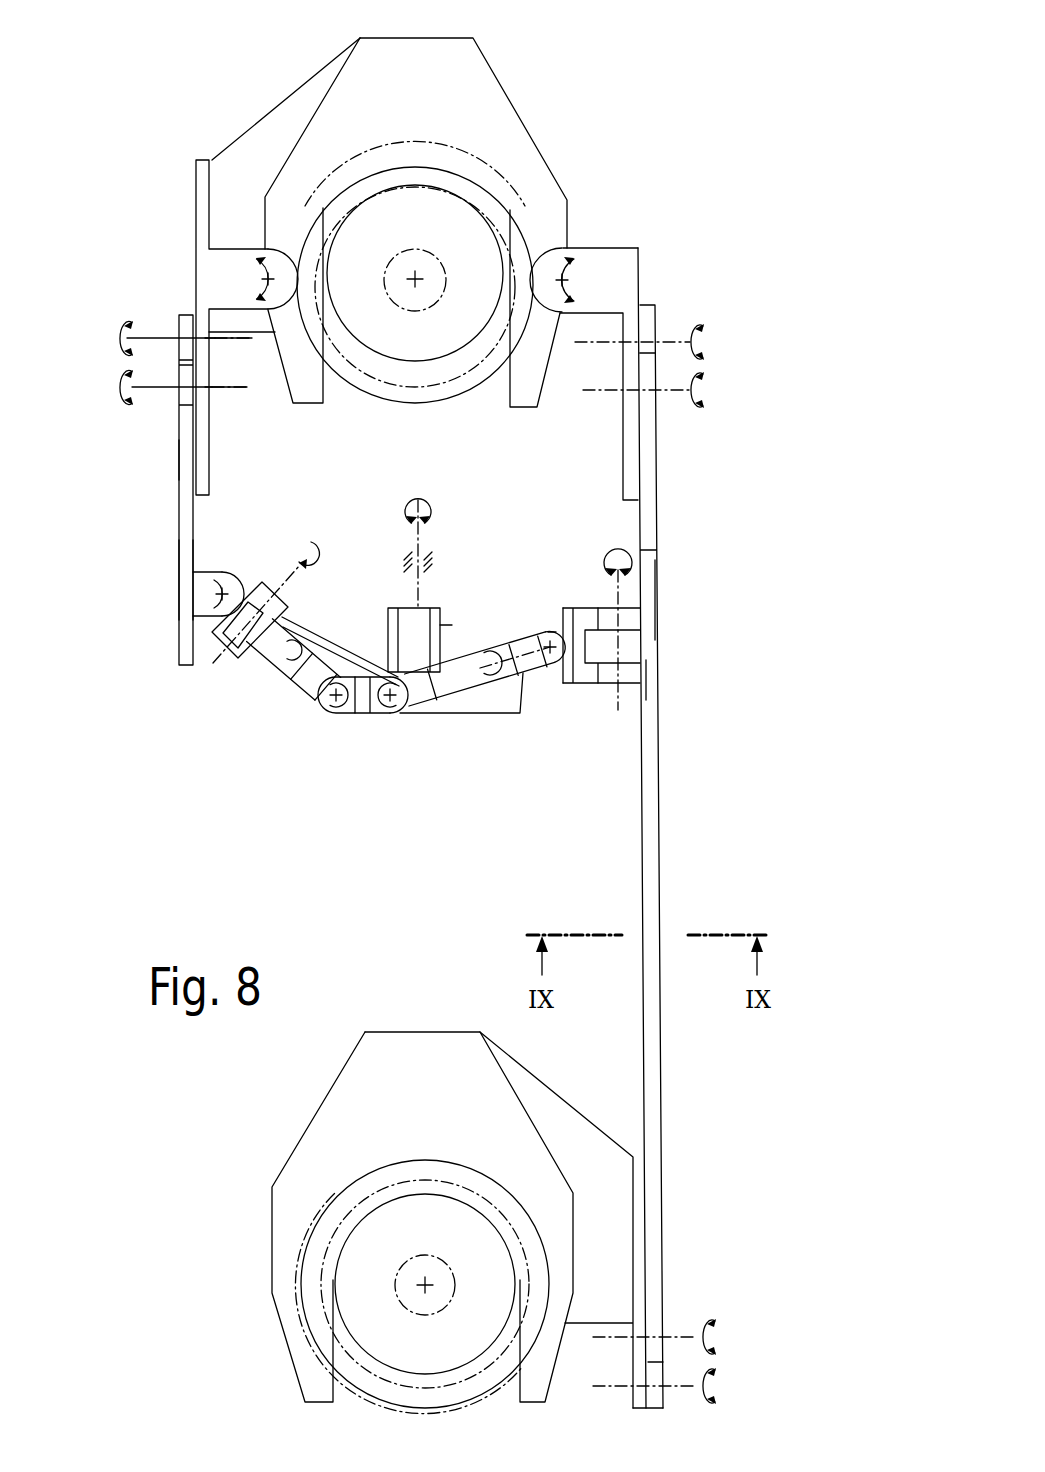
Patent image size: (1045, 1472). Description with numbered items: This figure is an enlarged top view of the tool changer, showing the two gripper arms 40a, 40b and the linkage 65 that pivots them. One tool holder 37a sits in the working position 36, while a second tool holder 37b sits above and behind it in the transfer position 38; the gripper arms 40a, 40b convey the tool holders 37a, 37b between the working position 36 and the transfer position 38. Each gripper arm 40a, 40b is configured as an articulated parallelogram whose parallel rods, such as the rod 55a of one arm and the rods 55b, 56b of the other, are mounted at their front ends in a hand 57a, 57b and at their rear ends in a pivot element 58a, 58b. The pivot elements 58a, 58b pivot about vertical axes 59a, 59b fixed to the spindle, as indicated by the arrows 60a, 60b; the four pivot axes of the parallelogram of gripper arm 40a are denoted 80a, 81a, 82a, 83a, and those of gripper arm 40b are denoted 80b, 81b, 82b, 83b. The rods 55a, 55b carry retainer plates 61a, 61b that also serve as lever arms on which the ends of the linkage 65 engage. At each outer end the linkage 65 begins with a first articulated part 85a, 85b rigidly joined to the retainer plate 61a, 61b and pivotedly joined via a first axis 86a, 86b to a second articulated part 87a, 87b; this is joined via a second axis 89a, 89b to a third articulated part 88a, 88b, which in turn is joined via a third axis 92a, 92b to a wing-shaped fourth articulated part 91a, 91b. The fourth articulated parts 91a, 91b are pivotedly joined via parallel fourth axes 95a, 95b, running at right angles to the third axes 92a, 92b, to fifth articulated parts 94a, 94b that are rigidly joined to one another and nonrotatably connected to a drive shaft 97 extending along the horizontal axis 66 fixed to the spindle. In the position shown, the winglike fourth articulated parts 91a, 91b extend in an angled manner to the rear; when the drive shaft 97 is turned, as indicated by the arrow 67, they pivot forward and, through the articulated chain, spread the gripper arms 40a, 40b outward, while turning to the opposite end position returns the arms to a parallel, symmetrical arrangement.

The working position 36 is at (421, 284).
The tool holder 37a is at (388, 360).
The second tool holder 37b is at (370, 1352).
The transfer position 38 is at (427, 1290).
The gripper arm 40a is at (175, 459).
The gripper arm 40b is at (662, 600).
The rod 55a is at (179, 405).
The rod 55b is at (190, 318).
The rod 56b is at (664, 1401).
The hand 57a is at (518, 110).
The hand 57b is at (428, 1062).
The pivot element 58a is at (222, 266).
The pivot element 58b is at (610, 266).
The axis fixed to the spindle 59a is at (268, 276).
The axis fixed to the spindle 59b is at (566, 274).
The arrow 60a is at (274, 256).
The arrow 60b is at (567, 296).
The retainer plate 61a is at (179, 556).
The retainer plate 61b is at (656, 688).
The linkage 65 is at (473, 719).
The axis fixed to the spindle 66 is at (422, 593).
The arrow 67 is at (436, 511).
The pivot axis 80a is at (238, 388).
The pivot axis 80b is at (690, 392).
The pivot axis 81a is at (232, 338).
The pivot axis 81b is at (690, 340).
The pivot axis 82a is at (249, 420).
The pivot axis 82b is at (690, 1386).
The pivot axis 83a is at (243, 361).
The pivot axis 83b is at (690, 1337).
The first articulated part 85a is at (233, 573).
The first articulated part 85b is at (634, 673).
The first axis 86a is at (212, 598).
The first axis 86b is at (612, 600).
The second articulated part 87a is at (213, 663).
The second articulated part 87b is at (584, 682).
The third articulated part 88a is at (238, 655).
The third articulated part 88b is at (552, 690).
The second axis 89a is at (312, 586).
The second axis 89b is at (552, 633).
The fourth articulated part 91a is at (290, 678).
The fourth articulated part 91b is at (522, 638).
The third axis 92a is at (284, 620).
The third axis 92b is at (545, 668).
The fifth articulated part 94a is at (340, 714).
The fifth articulated part 94b is at (370, 714).
The fourth axis 95a is at (330, 706).
The fourth axis 95b is at (388, 688).
The drive shaft 97 is at (432, 629).